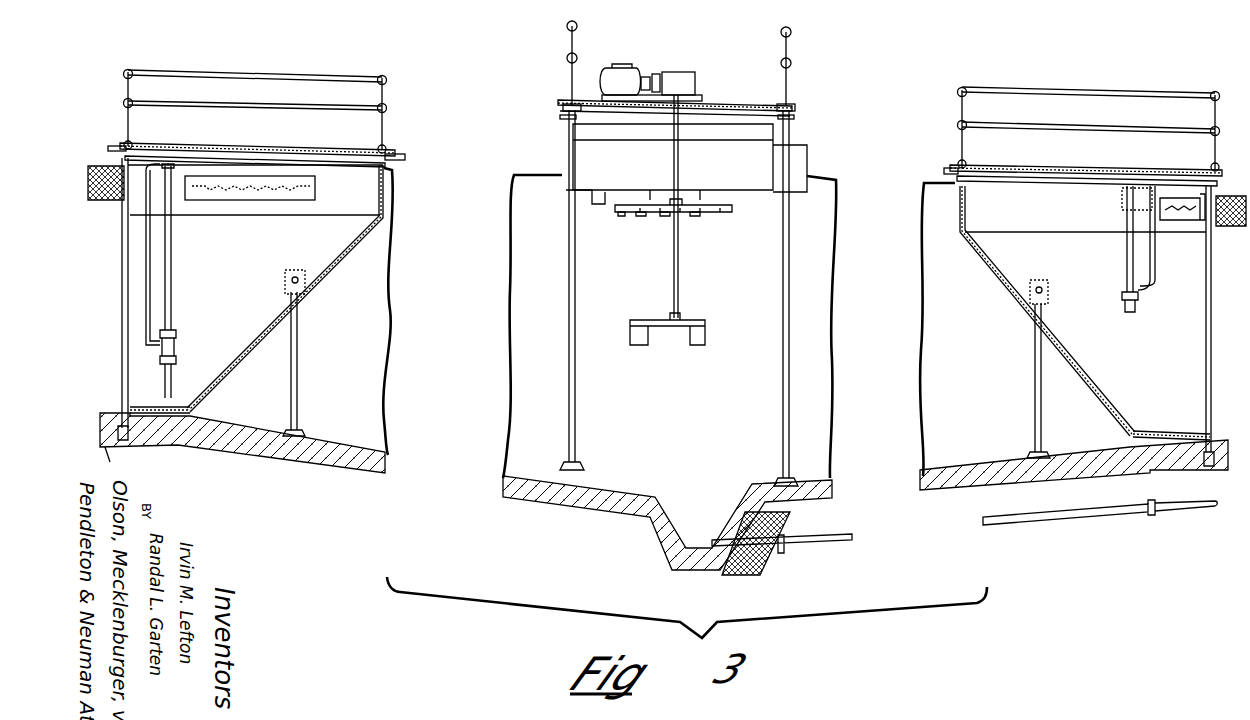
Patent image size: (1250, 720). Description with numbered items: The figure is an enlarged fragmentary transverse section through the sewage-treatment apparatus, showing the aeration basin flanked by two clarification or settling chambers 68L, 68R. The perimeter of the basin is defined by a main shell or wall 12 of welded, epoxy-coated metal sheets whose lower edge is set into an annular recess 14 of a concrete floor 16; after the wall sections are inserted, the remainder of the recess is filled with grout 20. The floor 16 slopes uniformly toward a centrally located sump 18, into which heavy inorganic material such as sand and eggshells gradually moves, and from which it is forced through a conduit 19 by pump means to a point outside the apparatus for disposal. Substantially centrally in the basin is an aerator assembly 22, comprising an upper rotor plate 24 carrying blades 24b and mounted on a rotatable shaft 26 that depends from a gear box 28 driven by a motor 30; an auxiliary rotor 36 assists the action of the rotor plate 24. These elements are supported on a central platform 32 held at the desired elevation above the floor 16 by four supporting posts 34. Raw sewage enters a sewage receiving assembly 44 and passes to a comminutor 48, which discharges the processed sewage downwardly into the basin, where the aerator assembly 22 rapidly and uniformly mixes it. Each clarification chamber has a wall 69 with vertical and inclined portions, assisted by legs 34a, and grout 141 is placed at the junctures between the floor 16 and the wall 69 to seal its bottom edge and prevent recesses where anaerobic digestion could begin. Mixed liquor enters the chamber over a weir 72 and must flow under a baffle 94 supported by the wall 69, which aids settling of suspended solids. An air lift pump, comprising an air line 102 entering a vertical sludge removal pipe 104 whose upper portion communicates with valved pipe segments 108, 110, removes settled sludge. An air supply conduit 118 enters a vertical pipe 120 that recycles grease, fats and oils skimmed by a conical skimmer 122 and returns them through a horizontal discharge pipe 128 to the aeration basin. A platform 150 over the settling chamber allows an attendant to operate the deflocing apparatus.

The main shell or wall 12 is at (122, 294).
The annular recess 14 is at (120, 426).
The concrete floor 16 is at (304, 472).
The sump 18 is at (700, 530).
The conduit 19 is at (802, 546).
The grout 20 is at (1176, 488).
The aerator assembly 22 is at (708, 85).
The upper rotor plate 24 is at (724, 230).
The blades 24b is at (664, 216).
The rotatable shaft 26 is at (678, 254).
The gear box 28 is at (670, 72).
The motor 30 is at (615, 70).
The central platform 32 is at (722, 108).
The supporting posts 34 is at (575, 302).
The legs 34a is at (297, 398).
The auxiliary rotor 36 is at (646, 344).
The sewage receiving assembly 44 is at (806, 138).
The comminutor 48 is at (585, 132).
The clarification chamber 68L is at (392, 200).
The clarification chamber 68R is at (950, 262).
The wall 69 is at (318, 284).
The weir 72 is at (316, 198).
The baffle 94 is at (315, 186).
The air line 102 is at (146, 254).
The sludge removal pipe 104 is at (171, 258).
The pipe segment 108 is at (394, 154).
The pipe segment 110 is at (128, 146).
The air supply conduit 118 is at (1155, 254).
The vertically disposed pipe 120 is at (1127, 250).
The conical skimmer 122 is at (1125, 210).
The horizontal discharge pipe 128 is at (948, 168).
The grout 141 is at (190, 412).
The platform 150 is at (350, 137).